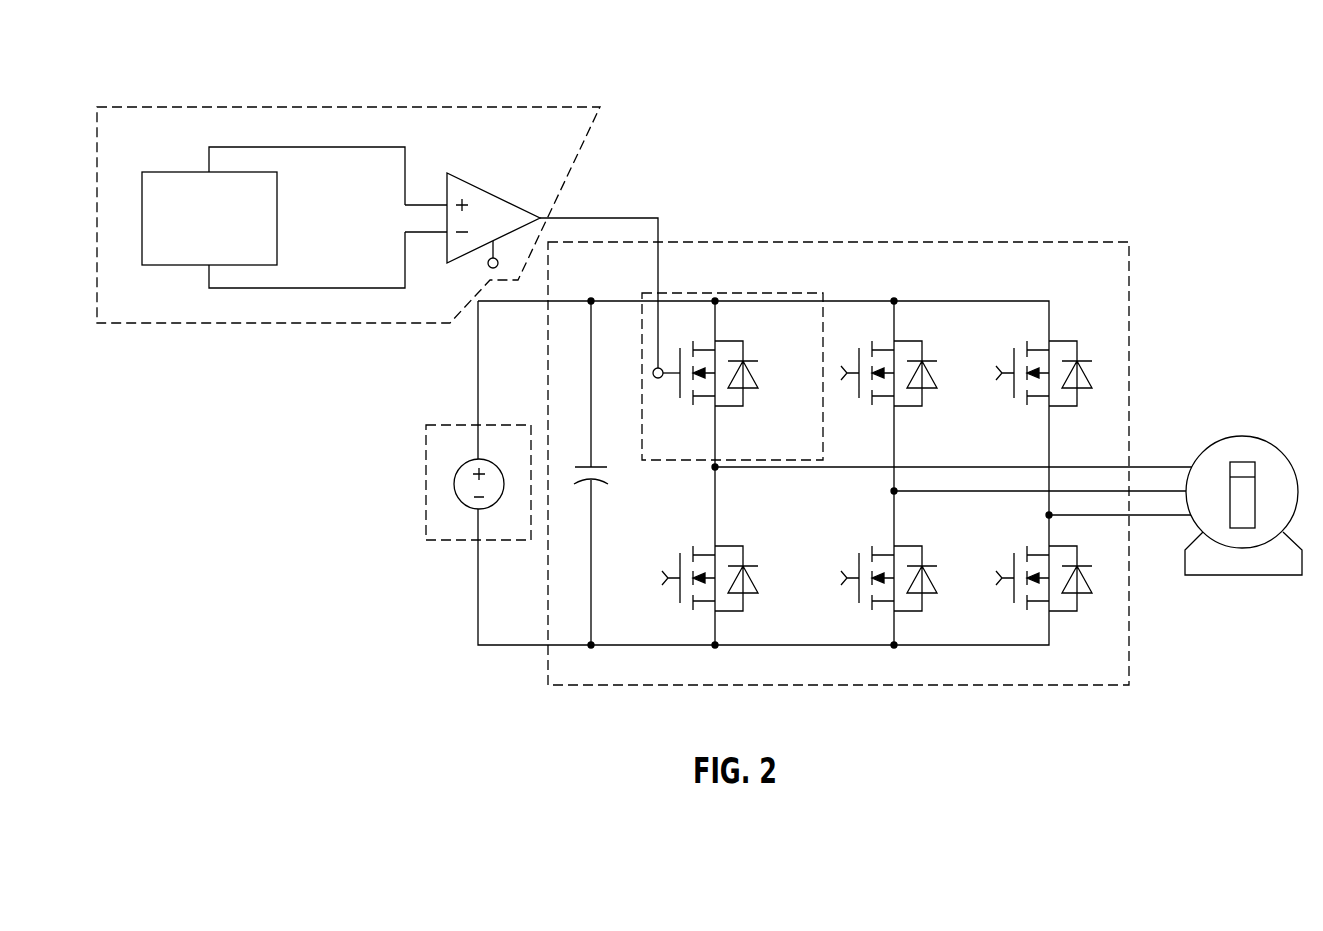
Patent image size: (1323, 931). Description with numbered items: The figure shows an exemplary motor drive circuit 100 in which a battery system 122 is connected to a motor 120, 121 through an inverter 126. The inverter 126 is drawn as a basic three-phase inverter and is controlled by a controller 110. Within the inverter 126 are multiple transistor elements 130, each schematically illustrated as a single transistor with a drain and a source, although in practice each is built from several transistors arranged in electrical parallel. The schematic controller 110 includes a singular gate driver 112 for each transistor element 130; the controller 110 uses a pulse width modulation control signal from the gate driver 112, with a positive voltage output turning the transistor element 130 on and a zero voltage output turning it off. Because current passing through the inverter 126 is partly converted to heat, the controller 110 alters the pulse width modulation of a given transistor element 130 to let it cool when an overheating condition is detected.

The motor drive circuit 100 is at (1143, 127).
The controller 110 is at (364, 107).
The gate driver 112 is at (518, 205).
The motor 120 is at (1246, 470).
The motor 121 is at (1243, 436).
The battery system 122 is at (426, 466).
The inverter 126 is at (880, 242).
The transistor element 130 is at (760, 292).